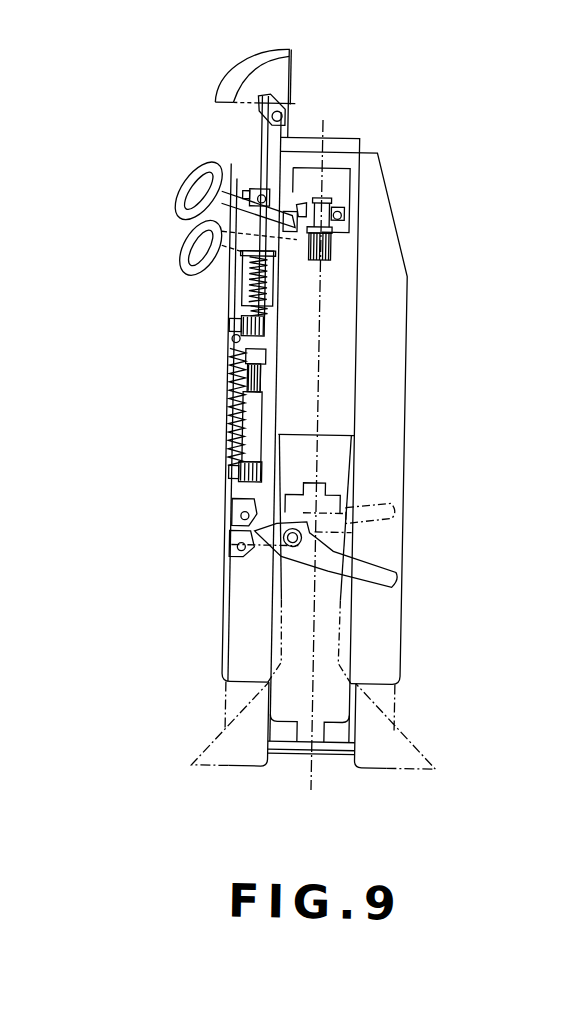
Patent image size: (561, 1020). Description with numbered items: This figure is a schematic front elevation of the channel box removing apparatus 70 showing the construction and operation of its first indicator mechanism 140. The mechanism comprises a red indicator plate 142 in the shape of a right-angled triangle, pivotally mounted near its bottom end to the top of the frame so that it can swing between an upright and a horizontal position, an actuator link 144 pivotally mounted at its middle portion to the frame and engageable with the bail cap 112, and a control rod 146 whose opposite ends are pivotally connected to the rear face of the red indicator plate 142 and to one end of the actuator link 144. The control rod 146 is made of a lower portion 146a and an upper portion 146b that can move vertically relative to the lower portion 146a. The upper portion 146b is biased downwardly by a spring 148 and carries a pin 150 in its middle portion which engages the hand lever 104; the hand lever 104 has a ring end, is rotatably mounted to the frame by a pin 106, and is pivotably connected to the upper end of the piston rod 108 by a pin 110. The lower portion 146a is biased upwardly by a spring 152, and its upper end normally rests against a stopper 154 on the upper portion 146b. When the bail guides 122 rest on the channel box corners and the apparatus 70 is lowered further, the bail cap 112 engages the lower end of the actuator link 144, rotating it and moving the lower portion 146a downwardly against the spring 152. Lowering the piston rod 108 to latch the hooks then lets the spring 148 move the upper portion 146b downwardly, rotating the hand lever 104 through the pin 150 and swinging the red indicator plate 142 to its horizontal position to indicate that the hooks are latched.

The channel box removing apparatus 70 is at (390, 343).
The hand lever 104 is at (172, 196).
The pin 106 is at (341, 214).
The piston rod 108 is at (329, 257).
The pin 110 is at (308, 198).
The bail cap 112 is at (406, 603).
The bail guides 122 is at (428, 752).
The first indicator mechanism 140 is at (161, 468).
The red indicator plate 142 is at (286, 70).
The actuator link 144 is at (385, 568).
The control rod 146 is at (226, 401).
The lower portion 146a is at (228, 462).
The upper portion 146b is at (230, 331).
The spring 148 is at (237, 285).
The pin 150 is at (257, 198).
The spring 152 is at (228, 432).
The stopper 154 is at (229, 374).